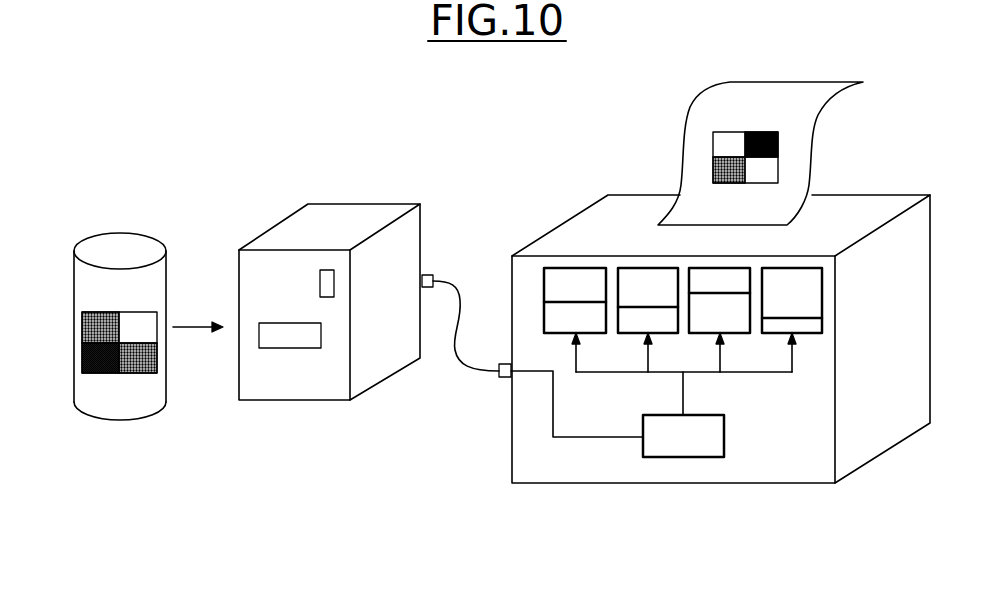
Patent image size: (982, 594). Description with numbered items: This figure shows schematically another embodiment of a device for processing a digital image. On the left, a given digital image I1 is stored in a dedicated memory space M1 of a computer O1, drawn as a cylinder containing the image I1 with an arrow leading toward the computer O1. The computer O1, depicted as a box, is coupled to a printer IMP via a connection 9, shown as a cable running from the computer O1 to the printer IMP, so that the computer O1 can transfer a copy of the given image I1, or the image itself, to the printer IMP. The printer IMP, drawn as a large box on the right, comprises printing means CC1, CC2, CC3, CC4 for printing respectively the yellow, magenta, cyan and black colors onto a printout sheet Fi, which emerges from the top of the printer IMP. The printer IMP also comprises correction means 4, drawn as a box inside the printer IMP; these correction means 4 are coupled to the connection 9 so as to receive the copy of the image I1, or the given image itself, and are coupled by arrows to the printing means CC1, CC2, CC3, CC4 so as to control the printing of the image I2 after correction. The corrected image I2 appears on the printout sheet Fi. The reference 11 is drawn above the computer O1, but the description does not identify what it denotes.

The dedicated memory space M1 is at (156, 282).
The given digital image I1 is at (103, 378).
The image capture device 11 is at (261, 176).
The computer O1 is at (364, 204).
The connection 9 is at (447, 276).
The printer IMP is at (672, 484).
The printing means CC1 is at (575, 300).
The printing means CC2 is at (648, 300).
The printing means CC3 is at (719, 300).
The printing means CC4 is at (792, 300).
The correction means 4 is at (683, 436).
The printout sheet Fi is at (810, 155).
The image after correction I2 is at (735, 124).